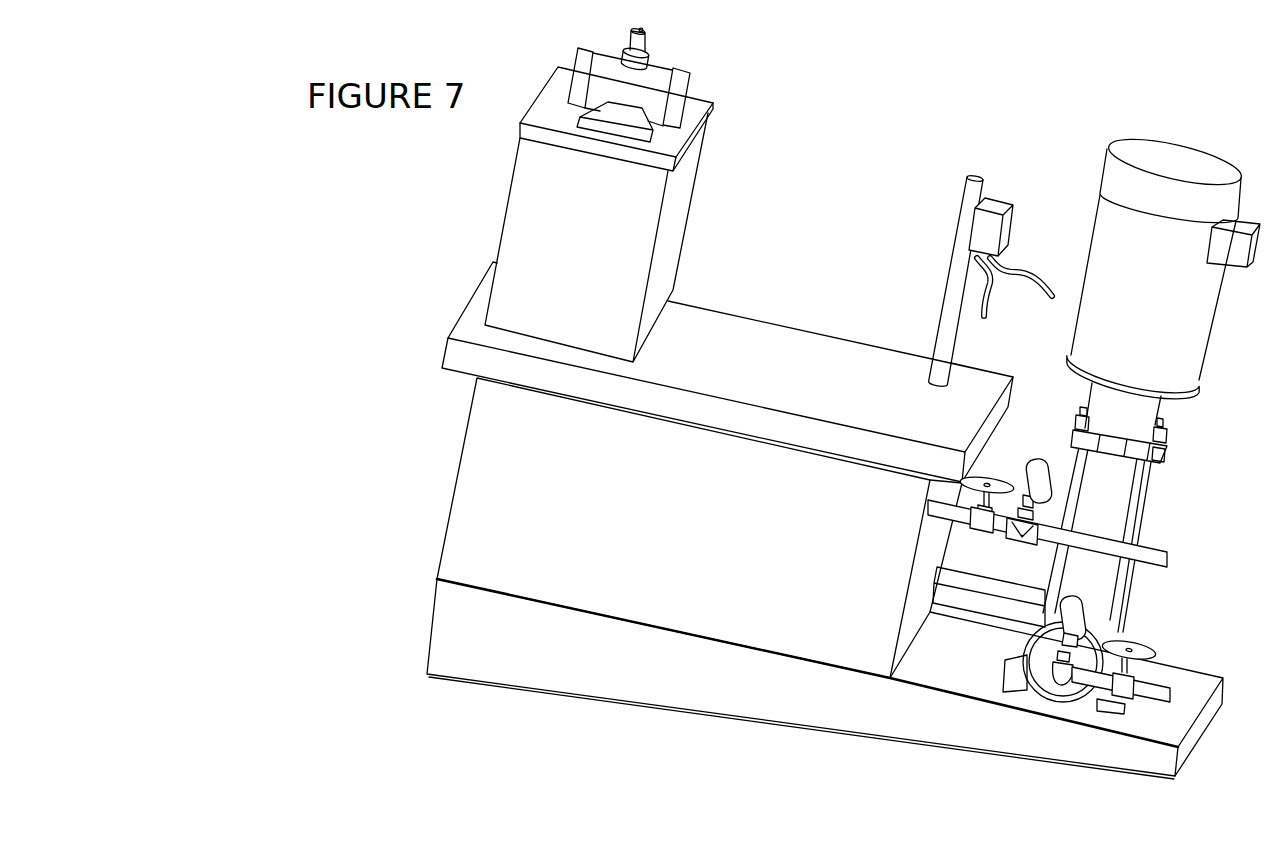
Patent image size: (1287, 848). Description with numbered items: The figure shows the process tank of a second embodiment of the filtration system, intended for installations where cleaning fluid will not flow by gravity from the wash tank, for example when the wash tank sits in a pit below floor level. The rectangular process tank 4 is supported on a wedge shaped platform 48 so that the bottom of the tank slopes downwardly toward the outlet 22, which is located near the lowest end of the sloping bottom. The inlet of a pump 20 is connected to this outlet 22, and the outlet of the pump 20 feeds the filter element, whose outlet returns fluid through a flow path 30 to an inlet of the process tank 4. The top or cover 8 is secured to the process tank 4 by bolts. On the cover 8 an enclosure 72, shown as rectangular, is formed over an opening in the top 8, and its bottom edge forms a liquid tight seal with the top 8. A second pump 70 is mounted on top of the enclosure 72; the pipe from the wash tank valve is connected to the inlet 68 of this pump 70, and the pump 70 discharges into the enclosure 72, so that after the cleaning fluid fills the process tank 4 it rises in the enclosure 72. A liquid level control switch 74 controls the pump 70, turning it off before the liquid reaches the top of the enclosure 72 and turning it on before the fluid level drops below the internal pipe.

The process tank 4 is at (753, 292).
The top or cover 8 is at (843, 334).
The pump 20 is at (1133, 603).
The outlet 22 is at (957, 585).
The flow path 30 is at (1150, 541).
The wedge shaped platform 48 is at (667, 682).
The inlet 68 is at (646, 30).
The pump 70 is at (662, 68).
The enclosure 72 is at (690, 181).
The liquid level control switch 74 is at (998, 198).